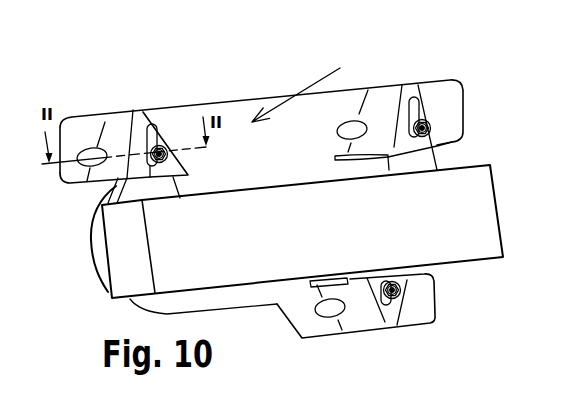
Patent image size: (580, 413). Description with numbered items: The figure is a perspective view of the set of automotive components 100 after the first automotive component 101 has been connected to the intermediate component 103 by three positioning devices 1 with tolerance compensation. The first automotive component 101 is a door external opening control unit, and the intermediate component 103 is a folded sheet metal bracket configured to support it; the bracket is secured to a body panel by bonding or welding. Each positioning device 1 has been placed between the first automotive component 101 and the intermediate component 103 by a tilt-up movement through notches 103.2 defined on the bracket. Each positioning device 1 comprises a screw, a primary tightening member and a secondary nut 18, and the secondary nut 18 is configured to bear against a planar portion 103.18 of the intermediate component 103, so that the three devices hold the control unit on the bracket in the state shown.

The set of automotive components 100 is at (102, 100).
The first automotive component 101 is at (128, 253).
The intermediate component 103 is at (248, 163).
The notches 103.2 is at (160, 126).
The planar portion 103.18 is at (440, 143).
The positioning device with tolerance compensation 1 is at (157, 153).
The secondary nut 18 is at (423, 122).